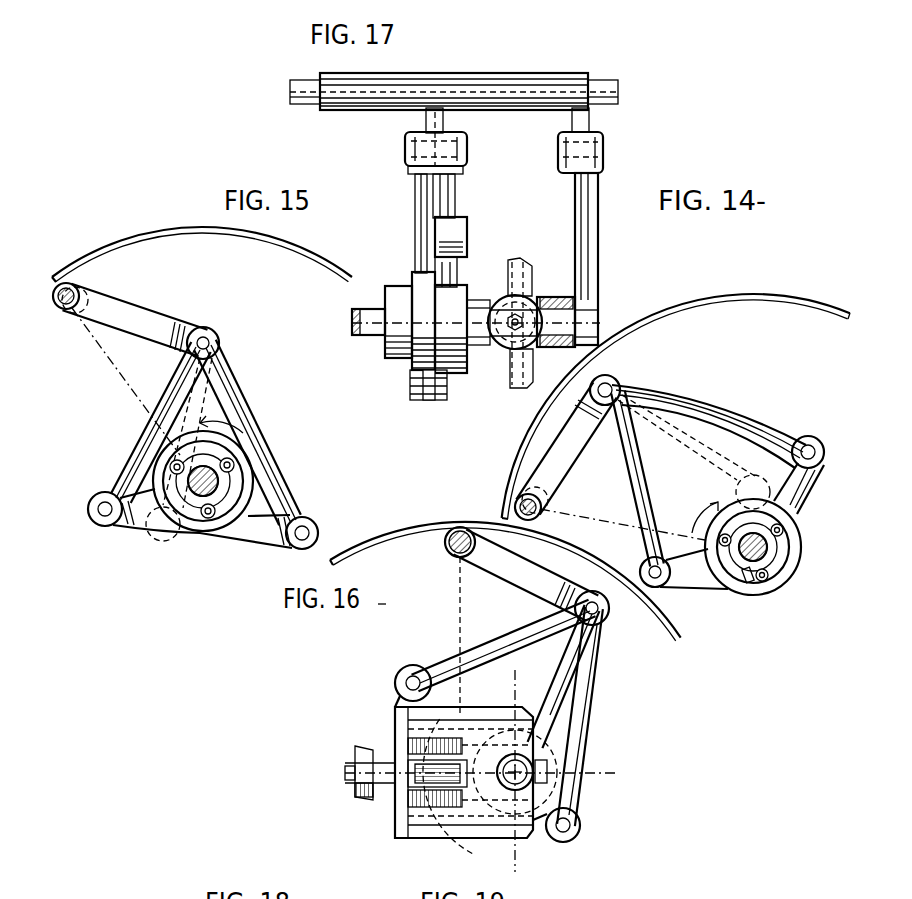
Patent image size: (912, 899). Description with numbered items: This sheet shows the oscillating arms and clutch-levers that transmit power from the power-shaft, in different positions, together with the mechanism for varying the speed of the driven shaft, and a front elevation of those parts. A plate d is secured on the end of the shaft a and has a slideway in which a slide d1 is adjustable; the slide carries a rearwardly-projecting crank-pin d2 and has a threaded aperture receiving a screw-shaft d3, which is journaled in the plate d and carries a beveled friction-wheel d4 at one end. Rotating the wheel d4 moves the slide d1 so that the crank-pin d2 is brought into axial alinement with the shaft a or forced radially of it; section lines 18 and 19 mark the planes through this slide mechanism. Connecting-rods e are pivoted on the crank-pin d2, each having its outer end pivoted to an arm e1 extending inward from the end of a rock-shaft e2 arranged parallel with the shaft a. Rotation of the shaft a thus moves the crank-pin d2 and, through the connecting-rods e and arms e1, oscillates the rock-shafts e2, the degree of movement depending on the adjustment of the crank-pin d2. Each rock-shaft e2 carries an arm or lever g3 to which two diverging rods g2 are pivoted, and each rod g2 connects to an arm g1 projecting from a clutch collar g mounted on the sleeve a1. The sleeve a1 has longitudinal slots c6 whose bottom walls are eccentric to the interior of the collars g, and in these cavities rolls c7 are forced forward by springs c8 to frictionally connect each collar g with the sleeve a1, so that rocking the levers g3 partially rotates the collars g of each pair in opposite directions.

In FIG. 17, the shaft a is at (353, 323).
In FIG. 15, the shaft a is at (203, 471).
In FIG. 14, the shaft a is at (790, 548).
In FIG. 17, the sleeve a1 is at (394, 290).
In FIG. 15, the sleeve a1 is at (232, 490).
In FIG. 14, the sleeve a1 is at (782, 565).
In FIG. 14, the longitudinal slots c6 is at (750, 585).
In FIG. 15, the rolls c7 is at (233, 468).
In FIG. 14, the rolls c7 is at (784, 536).
In FIG. 15, the springs c8 is at (224, 506).
In FIG. 14, the springs c8 is at (772, 578).
In FIG. 17, the plate d is at (514, 262).
In FIG. 16, the plate d is at (512, 708).
In FIG. 17, the slide d1 is at (528, 280).
In FIG. 16, the slide d1 is at (482, 800).
In FIG. 17, the crank-pin d2 is at (560, 318).
In FIG. 16, the crank-pin d2 is at (532, 764).
In FIG. 16, the screw-shaft d3 is at (418, 790).
In FIG. 17, the beveled friction-wheel d4 is at (506, 350).
In FIG. 16, the beveled friction-wheel d4 is at (360, 793).
In FIG. 17, the connecting-rods e is at (590, 241).
In FIG. 16, the connecting-rods e is at (560, 682).
In FIG. 17, the arm e1 is at (583, 127).
In FIG. 15, the arm e1 is at (141, 321).
In FIG. 16, the arm e1 is at (531, 578).
In FIG. 17, the rock-shaft e2 is at (474, 80).
In FIG. 15, the rock-shaft e2 is at (78, 295).
In FIG. 14, the rock-shaft e2 is at (520, 505).
In FIG. 16, the rock-shaft e2 is at (505, 618).
In FIG. 17, the clutch members or collars g is at (420, 340).
In FIG. 15, the clutch members or collars g is at (214, 528).
In FIG. 14, the clutch members or collars g is at (738, 594).
In FIG. 16, the clutch members or collars g is at (471, 772).
In FIG. 17, the arm g1 is at (452, 270).
In FIG. 15, the arm g1 is at (130, 532).
In FIG. 14, the arm g1 is at (698, 598).
In FIG. 16, the arm g1 is at (398, 700).
In FIG. 17, the rod g2 is at (447, 205).
In FIG. 15, the rod g2 is at (150, 443).
In FIG. 14, the rod g2 is at (700, 472).
In FIG. 16, the rod g2 is at (492, 653).
In FIG. 17, the arm or lever g3 is at (438, 131).
In FIG. 14, the arm or lever g3 is at (568, 445).
In FIG. 16, the section line 18 18 is at (464, 773).
In FIG. 16, the section line 19 19 is at (515, 776).